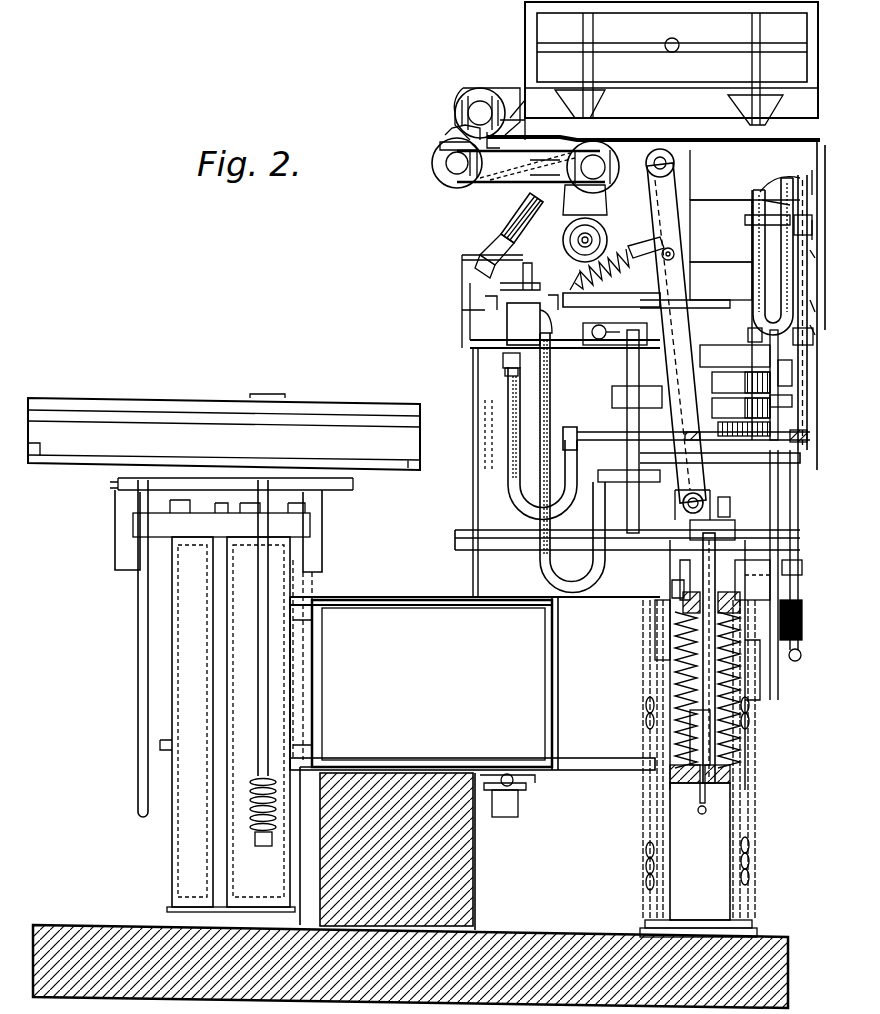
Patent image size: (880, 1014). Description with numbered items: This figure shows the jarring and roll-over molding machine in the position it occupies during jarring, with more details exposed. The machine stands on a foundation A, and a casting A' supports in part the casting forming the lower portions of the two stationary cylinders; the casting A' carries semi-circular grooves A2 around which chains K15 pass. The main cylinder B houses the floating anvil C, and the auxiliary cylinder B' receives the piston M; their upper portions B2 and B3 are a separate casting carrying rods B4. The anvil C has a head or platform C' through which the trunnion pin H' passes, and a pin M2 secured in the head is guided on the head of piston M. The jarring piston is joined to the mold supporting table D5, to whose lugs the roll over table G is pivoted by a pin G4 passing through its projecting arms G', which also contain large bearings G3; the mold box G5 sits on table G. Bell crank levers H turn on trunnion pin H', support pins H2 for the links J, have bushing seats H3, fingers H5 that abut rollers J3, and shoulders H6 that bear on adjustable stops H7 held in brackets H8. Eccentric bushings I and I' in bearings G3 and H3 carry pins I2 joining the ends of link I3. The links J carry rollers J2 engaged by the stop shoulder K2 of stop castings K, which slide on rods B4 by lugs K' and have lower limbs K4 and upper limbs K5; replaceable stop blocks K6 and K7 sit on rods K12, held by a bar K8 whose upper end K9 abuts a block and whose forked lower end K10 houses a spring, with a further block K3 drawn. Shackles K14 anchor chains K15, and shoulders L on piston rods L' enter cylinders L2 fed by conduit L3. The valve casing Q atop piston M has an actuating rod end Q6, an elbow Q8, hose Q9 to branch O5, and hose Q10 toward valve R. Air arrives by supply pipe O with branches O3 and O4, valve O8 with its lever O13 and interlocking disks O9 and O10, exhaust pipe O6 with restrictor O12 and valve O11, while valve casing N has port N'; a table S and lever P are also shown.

The table S is at (224, 432).
The main cylinder lower portion B is at (475, 683).
The auxiliary cylinder lower portion B' is at (506, 472).
The upper cylinder portion B2 is at (612, 395).
The upper auxiliary cylinder portion B3 is at (480, 392).
The rods B4 is at (627, 370).
The foundation A is at (410, 890).
The casting A' is at (698, 860).
The semi-circular grooves A2 is at (640, 850).
The valve casing N is at (516, 807).
The port N' is at (519, 787).
The roll over table G is at (671, 63).
The projecting arms G' is at (653, 124).
The large bearings G3 is at (440, 146).
The pin G4 is at (480, 110).
The mold box G5 is at (672, 47).
The eccentric bushing I is at (533, 185).
The eccentric bushing I' is at (452, 128).
The pins I2 is at (445, 175).
The link I3 is at (543, 175).
The bell crank levers H is at (613, 246).
The trunnion pin H' is at (491, 301).
The pins H2 is at (672, 163).
The bushing seats H3 is at (594, 165).
The finger H5 is at (640, 253).
The shoulders H6 is at (571, 240).
The adjustable stops H7 is at (518, 208).
The brackets H8 is at (495, 242).
The piston M is at (500, 303).
The pin M2 is at (533, 277).
The valve casing Q is at (508, 330).
The actuating rod upper end Q6 is at (503, 358).
The elbow Q8 is at (510, 375).
The flexible hose Q9 is at (508, 455).
The flexible hose Q10 is at (540, 520).
The third branch O5 is at (605, 434).
The links J is at (676, 333).
The cross pins and rollers J2 is at (705, 503).
The rollers J3 is at (680, 248).
The mold supporting table D5 is at (745, 175).
The floating anvil C is at (696, 285).
The head or platform C' is at (721, 231).
The air supply pipe O is at (808, 275).
The branch O3 is at (795, 661).
The branch O4 is at (816, 174).
The exhaust branch pipe O6 is at (816, 224).
The valve O8 is at (760, 225).
The interlocking disk O9 is at (816, 327).
The interlocking disk O10 is at (819, 252).
The valve O11 is at (819, 303).
The flow restricting device O12 is at (778, 370).
The second actuating lever O13 is at (759, 216).
The lever P is at (778, 182).
The stop castings K is at (700, 654).
The lugs K' is at (629, 435).
The stop shoulder K2 is at (708, 490).
The block K3 is at (744, 428).
The lower limbs K4 is at (660, 612).
The upper limbs K5 is at (735, 356).
The replaceable stop block K6 is at (741, 382).
The replaceable stop block K7 is at (741, 407).
The bar K8 is at (732, 512).
The bar upper end K9 is at (770, 402).
The forked lower end K10 is at (752, 580).
The rods K12 is at (748, 334).
The adjustable shackles K14 is at (660, 655).
The chains K15 is at (652, 895).
The shoulders L is at (656, 577).
The piston rods L' is at (651, 593).
The cylinders L2 is at (705, 750).
The conduit L3 is at (705, 813).
The valve R is at (786, 575).